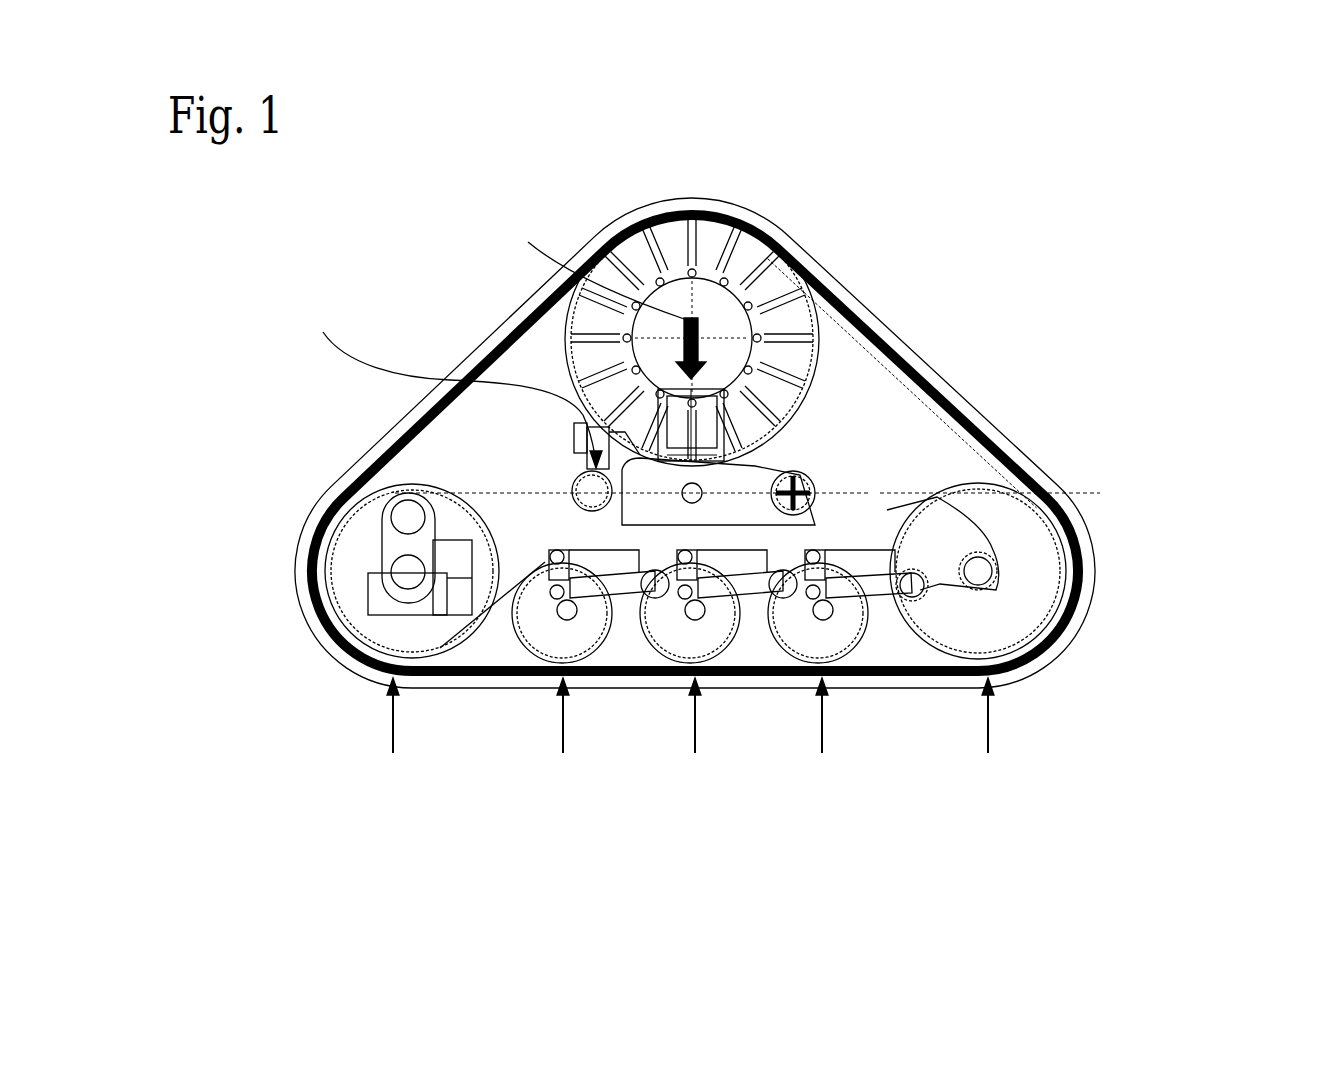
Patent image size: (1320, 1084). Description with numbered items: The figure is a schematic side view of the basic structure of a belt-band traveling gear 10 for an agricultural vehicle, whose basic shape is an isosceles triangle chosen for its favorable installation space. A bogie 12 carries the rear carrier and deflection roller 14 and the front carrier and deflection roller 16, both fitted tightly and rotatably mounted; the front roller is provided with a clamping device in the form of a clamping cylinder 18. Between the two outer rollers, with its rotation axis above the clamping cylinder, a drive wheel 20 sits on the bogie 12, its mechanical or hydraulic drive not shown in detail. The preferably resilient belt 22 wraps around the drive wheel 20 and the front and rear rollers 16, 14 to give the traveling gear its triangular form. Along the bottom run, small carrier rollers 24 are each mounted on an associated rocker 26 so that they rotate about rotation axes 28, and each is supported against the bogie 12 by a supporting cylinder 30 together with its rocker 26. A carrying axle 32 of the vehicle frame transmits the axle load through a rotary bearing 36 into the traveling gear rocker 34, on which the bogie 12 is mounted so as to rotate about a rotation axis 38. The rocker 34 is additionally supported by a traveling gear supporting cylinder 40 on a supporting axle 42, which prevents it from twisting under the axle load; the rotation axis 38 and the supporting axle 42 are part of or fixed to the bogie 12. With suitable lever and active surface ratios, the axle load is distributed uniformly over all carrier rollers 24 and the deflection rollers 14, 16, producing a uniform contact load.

The belt-band traveling gear 10 is at (1168, 763).
The bogie 12 is at (885, 510).
The rear carrier and deflection roller 14 is at (985, 520).
The front carrier and deflection roller 16 is at (362, 598).
The clamping cylinder 18 is at (410, 547).
The drive wheel 20 is at (763, 280).
The belt 22 is at (390, 447).
The carrier rollers 24 is at (552, 640).
The rockers 26 is at (593, 600).
The rotation axes 28 is at (905, 587).
The supporting cylinder 30 is at (540, 572).
The carrying axle 32 is at (710, 417).
The traveling gear rocker 34 is at (743, 474).
The rotary bearing 36 is at (700, 496).
The rotation axis 38 is at (815, 482).
The traveling gear supporting cylinder 40 is at (595, 445).
The supporting axle 42 is at (582, 490).